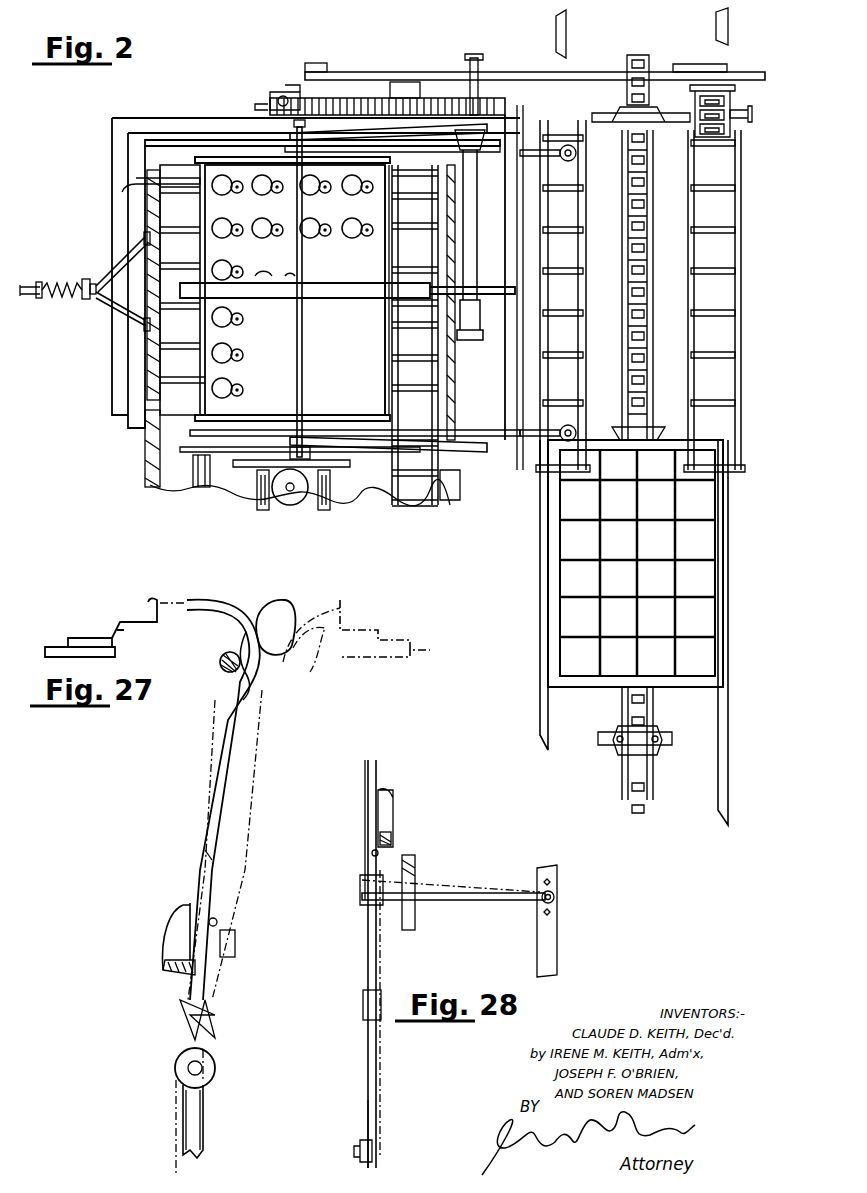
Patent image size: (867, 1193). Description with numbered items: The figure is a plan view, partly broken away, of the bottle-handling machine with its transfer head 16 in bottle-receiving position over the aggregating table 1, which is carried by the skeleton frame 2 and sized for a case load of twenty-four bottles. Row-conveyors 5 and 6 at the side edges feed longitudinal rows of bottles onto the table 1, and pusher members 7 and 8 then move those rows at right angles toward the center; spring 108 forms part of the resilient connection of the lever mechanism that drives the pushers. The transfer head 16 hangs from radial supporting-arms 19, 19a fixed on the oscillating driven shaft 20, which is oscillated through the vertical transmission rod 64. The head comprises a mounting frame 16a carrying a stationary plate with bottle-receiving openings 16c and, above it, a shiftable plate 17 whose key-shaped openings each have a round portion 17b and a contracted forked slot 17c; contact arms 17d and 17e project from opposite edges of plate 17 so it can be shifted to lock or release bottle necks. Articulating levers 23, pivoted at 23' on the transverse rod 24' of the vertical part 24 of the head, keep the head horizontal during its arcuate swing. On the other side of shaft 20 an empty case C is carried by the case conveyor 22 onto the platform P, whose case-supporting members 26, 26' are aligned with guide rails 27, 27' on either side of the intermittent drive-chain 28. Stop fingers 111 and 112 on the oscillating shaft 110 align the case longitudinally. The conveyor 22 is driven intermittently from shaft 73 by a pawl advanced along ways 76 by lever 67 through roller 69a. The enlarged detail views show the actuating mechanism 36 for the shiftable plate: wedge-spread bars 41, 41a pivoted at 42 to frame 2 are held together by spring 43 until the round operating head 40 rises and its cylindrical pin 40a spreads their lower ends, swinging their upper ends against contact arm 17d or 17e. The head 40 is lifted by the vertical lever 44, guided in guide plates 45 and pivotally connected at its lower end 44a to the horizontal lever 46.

In FIG. 2, the bottle aggregating support or table 1 is at (392, 232).
In FIG. 2, the skeleton frame 2 is at (112, 130).
In FIG. 27, the skeleton frame 2 is at (236, 947).
In FIG. 2, the row-conveyor 5 is at (201, 379).
In FIG. 2, the row-conveyor 6 is at (415, 335).
In FIG. 2, the pusher member 7 is at (147, 354).
In FIG. 2, the pusher member 8 is at (446, 388).
In FIG. 2, the transfer head 16 is at (200, 377).
In FIG. 2, the mounting and supporting frame 16a is at (214, 160).
In FIG. 2, the bottle-guiding and receiving openings 16c is at (275, 273).
In FIG. 2, the shiftable bottle-engaging member or plate 17 is at (292, 289).
In FIG. 2, the round portion 17b is at (214, 268).
In FIG. 2, the forked-shaped bottle engaging slot 17c is at (190, 283).
In FIG. 27, the contact arm 17d is at (116, 618).
In FIG. 27, the contact arm 17e is at (348, 625).
In FIG. 2, the radial supporting-arm 19 is at (372, 437).
In FIG. 2, the radial supporting-arm 19a is at (292, 150).
In FIG. 2, the oscillating driven shaft 20 is at (456, 360).
In FIG. 27, the oscillating driven shaft 20 is at (220, 660).
In FIG. 2, the case conveyor 22 is at (640, 58).
In FIG. 2, the articulating lever 23 is at (387, 290).
In FIG. 2, the pivot 23' is at (305, 294).
In FIG. 2, the vertical part of the transfer head 24 is at (271, 480).
In FIG. 2, the transverse rod 24' is at (347, 314).
In FIG. 2, the case-supporting member 26 is at (579, 295).
In FIG. 2, the case-supporting member 26' is at (737, 300).
In FIG. 2, the conveyor-rail or guide member 27 is at (515, 595).
In FIG. 2, the conveyor-rail or guide member 27' is at (750, 632).
In FIG. 2, the conveyor drive-chain 28 is at (625, 270).
In FIG. 27, the actuating mechanism 36 is at (218, 858).
In FIG. 27, the round operating head 40 is at (210, 1060).
In FIG. 27, the cylindrical pin 40a is at (188, 1072).
In FIG. 28, the cylindrical pin 40a is at (460, 898).
In FIG. 27, the wedge-spread bar 41 is at (235, 683).
In FIG. 28, the wedge-spread bar 41 is at (378, 790).
In FIG. 27, the wedge-spread bar 41a is at (262, 705).
In FIG. 28, the wedge-spread bar 41a is at (368, 795).
In FIG. 27, the pivot 42 is at (218, 920).
In FIG. 28, the pivot 42 is at (372, 853).
In FIG. 27, the spring 43 is at (172, 975).
In FIG. 28, the spring 43 is at (395, 840).
In FIG. 27, the vertically movable lever 44 is at (205, 1138).
In FIG. 28, the vertically movable lever 44 is at (380, 972).
In FIG. 28, the lower end of vertical lever 44a is at (405, 1134).
In FIG. 28, the guide plates 45 is at (363, 1006).
In FIG. 28, the horizontal lever 46 is at (360, 1145).
In FIG. 2, the vertical transmission rod 64 is at (272, 95).
In FIG. 2, the lever 67 is at (370, 73).
In FIG. 2, the roller 69a is at (720, 62).
In FIG. 2, the shaft 73 is at (745, 118).
In FIG. 2, the ways 76 is at (732, 104).
In FIG. 2, the spring 108 is at (56, 298).
In FIG. 2, the oscillating shaft 110 is at (519, 240).
In FIG. 2, the stop finger 111 is at (576, 430).
In FIG. 2, the stop finger 112 is at (576, 153).
In FIG. 2, the bulbs B is at (245, 320).
In FIG. 2, the honey-comb case or box C is at (724, 540).
In FIG. 2, the tiltable case-support or platform P is at (745, 246).